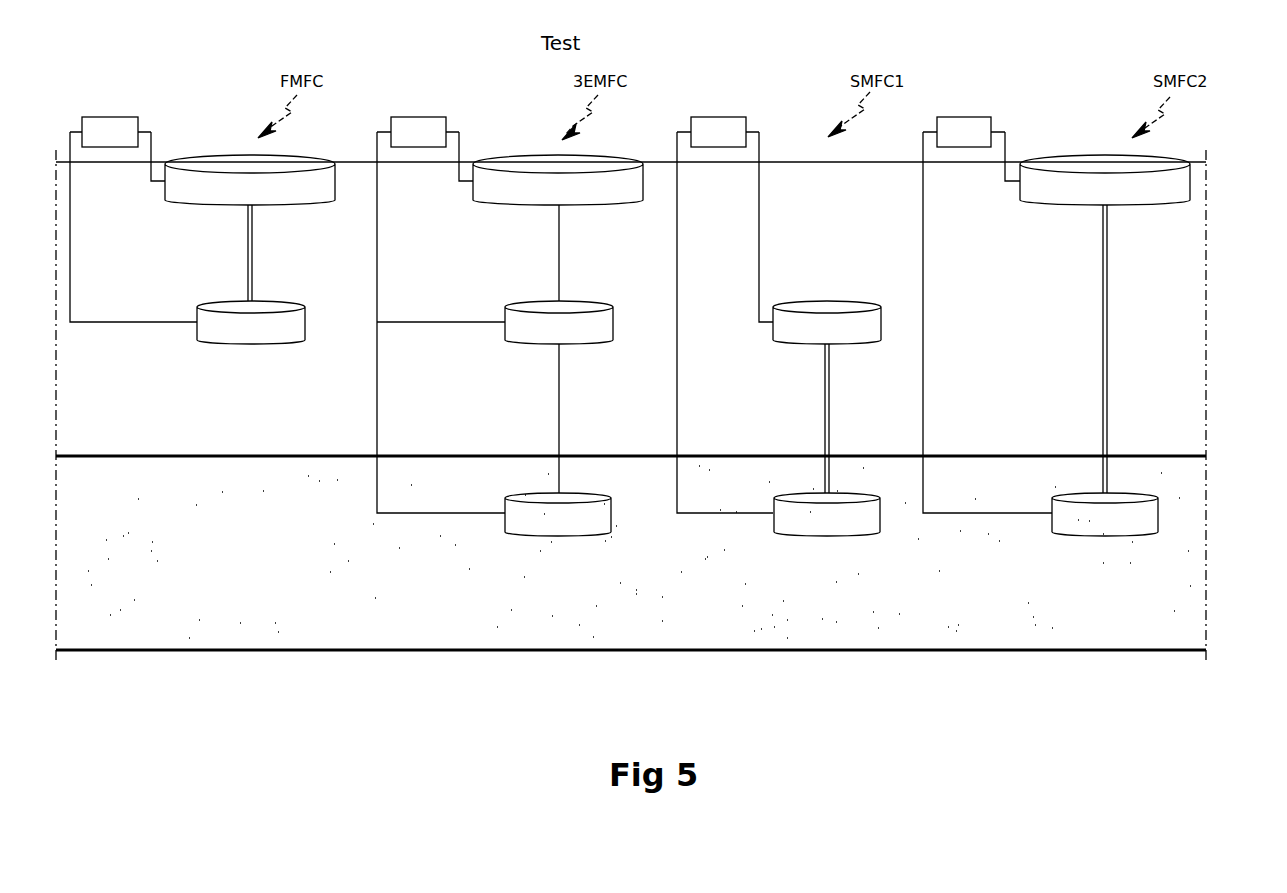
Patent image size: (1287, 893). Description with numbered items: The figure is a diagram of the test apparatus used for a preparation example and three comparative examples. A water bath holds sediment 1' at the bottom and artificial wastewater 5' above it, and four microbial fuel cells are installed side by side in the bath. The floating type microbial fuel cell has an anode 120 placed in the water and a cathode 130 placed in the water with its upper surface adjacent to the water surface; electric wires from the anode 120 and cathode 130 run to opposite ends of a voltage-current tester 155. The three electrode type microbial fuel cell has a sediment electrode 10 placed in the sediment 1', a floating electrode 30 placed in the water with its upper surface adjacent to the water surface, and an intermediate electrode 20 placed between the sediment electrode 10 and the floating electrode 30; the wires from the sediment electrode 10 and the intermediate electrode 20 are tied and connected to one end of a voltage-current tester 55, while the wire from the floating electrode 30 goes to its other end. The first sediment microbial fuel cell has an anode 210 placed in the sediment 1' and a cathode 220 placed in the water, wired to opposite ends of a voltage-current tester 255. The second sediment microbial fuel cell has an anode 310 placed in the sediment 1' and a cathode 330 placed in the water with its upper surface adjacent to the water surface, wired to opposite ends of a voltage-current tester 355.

The voltage-current tester 155 is at (108, 115).
The voltage-current tester 55 is at (420, 115).
The voltage-current tester 255 is at (720, 115).
The voltage-current tester 355 is at (963, 115).
The cathode 130 is at (285, 205).
The anode 120 is at (275, 343).
The floating electrode 30 is at (600, 205).
The intermediate electrode 20 is at (587, 343).
The sediment electrode 10 is at (582, 537).
The cathode 220 is at (852, 343).
The anode 210 is at (853, 537).
The cathode 330 is at (1053, 205).
The anode 310 is at (1083, 537).
The artificial wastewater 5' is at (665, 233).
The sediment 1' is at (665, 547).